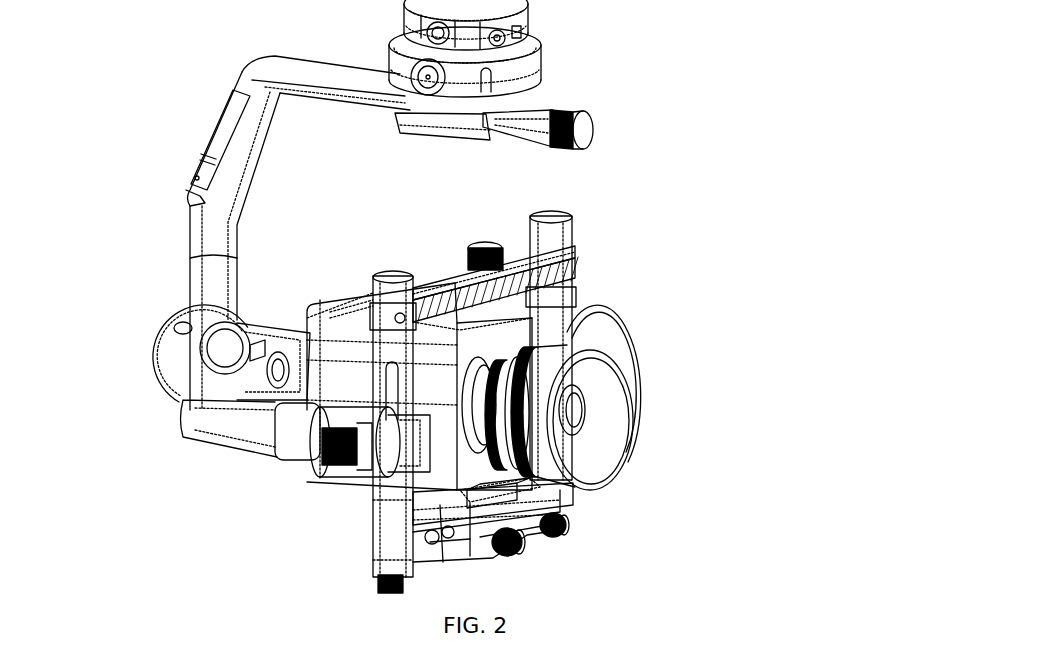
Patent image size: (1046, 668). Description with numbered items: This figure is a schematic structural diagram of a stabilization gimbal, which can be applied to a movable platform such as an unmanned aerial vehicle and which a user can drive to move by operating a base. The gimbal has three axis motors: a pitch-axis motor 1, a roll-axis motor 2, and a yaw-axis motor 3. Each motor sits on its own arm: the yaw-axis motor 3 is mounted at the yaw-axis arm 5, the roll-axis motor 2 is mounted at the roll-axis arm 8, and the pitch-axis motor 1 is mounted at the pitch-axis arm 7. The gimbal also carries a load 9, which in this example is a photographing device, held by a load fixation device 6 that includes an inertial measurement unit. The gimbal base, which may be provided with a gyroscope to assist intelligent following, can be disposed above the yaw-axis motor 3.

The pitch-axis motor 1 is at (605, 340).
The roll-axis motor 2 is at (180, 367).
The yaw-axis motor 3 is at (420, 20).
The yaw-axis arm 5 is at (203, 197).
The load fixation device 6 is at (557, 510).
The pitch-axis arm 7 is at (387, 518).
The roll-axis arm 8 is at (243, 430).
The load 9 is at (607, 418).